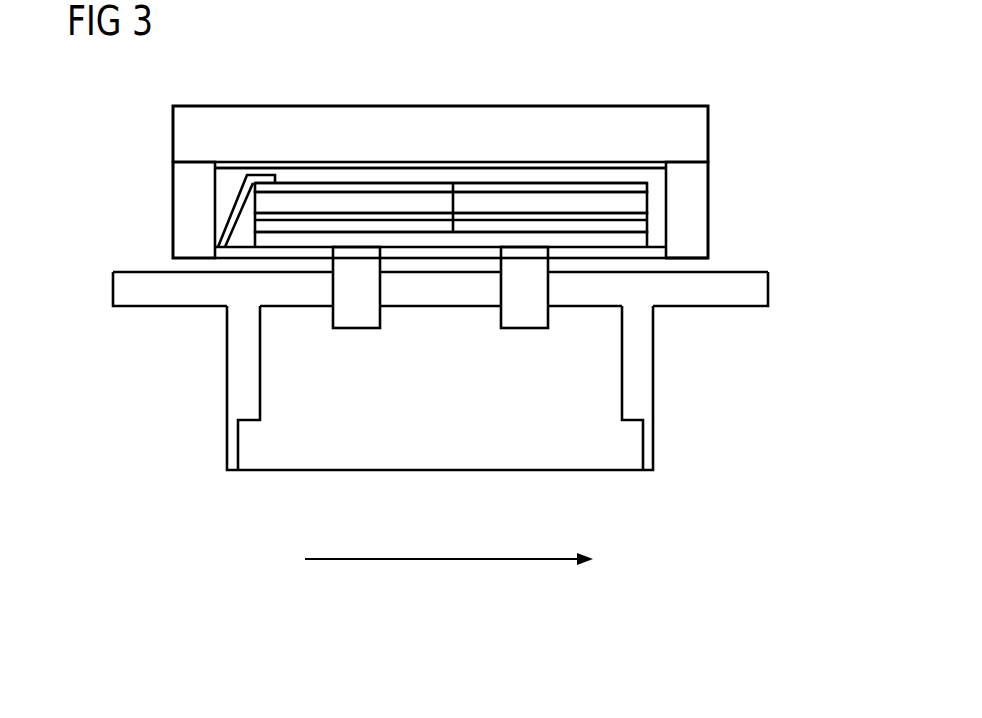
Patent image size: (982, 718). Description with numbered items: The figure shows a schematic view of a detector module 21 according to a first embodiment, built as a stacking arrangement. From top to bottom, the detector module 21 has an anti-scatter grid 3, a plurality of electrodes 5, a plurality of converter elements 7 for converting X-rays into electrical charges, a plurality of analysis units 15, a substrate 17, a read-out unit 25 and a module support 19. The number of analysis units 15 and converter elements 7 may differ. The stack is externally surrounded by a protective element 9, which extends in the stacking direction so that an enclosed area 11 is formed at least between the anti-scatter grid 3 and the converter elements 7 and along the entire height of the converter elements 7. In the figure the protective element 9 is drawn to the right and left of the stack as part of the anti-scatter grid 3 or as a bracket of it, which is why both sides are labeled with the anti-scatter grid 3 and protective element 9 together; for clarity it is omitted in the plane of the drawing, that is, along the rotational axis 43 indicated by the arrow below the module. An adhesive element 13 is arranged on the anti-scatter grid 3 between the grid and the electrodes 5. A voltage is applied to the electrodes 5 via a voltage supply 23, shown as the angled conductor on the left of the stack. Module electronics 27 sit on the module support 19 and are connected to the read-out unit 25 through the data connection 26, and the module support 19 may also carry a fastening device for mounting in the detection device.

The anti-scatter grid 3 is at (393, 120).
The electrodes 5 is at (320, 188).
The converter elements 7 is at (275, 205).
The protective element 9 is at (183, 180).
The enclosed area 11 is at (480, 173).
The adhesive element 13 is at (637, 165).
The analysis units 15 is at (275, 223).
The substrate 17 is at (638, 240).
The module support 19 is at (123, 288).
The detector module 21 is at (130, 109).
The voltage supply 23 is at (235, 187).
The read-out unit 25 is at (692, 265).
The data connection 26 is at (357, 313).
The module electronics 27 is at (580, 447).
The rotational axis 43 is at (438, 560).